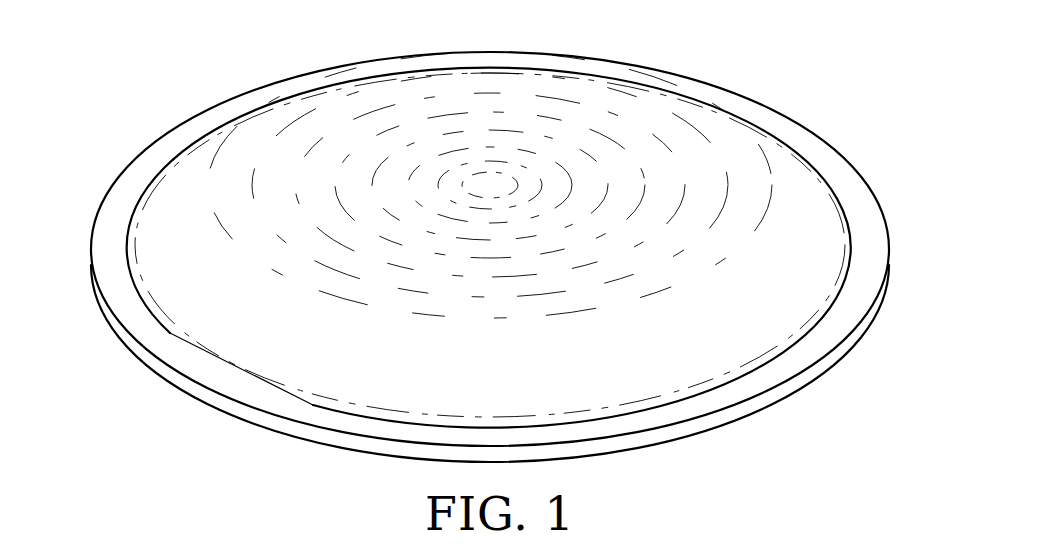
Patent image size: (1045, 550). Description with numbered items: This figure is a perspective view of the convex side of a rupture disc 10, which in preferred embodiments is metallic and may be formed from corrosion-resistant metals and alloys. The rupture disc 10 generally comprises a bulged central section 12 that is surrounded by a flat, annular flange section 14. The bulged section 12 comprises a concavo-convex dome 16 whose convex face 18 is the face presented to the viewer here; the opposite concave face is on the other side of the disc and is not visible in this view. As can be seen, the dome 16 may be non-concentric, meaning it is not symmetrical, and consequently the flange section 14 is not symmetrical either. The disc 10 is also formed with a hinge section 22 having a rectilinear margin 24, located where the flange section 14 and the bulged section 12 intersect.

The rupture disc 10 is at (785, 87).
The bulged central section 12 is at (725, 353).
The flat, annular flange section 14 is at (116, 296).
The concavo-convex dome 16 is at (218, 140).
The convex face 18 is at (529, 257).
The hinge section 22 is at (212, 367).
The rectilinear margin 24 is at (249, 374).